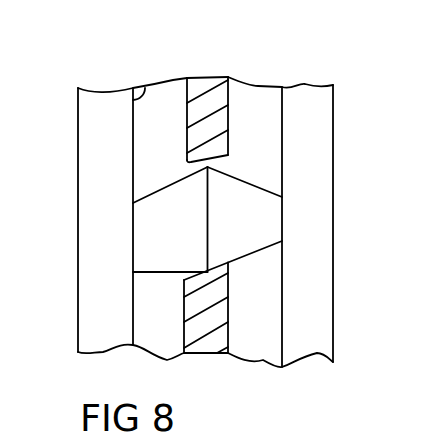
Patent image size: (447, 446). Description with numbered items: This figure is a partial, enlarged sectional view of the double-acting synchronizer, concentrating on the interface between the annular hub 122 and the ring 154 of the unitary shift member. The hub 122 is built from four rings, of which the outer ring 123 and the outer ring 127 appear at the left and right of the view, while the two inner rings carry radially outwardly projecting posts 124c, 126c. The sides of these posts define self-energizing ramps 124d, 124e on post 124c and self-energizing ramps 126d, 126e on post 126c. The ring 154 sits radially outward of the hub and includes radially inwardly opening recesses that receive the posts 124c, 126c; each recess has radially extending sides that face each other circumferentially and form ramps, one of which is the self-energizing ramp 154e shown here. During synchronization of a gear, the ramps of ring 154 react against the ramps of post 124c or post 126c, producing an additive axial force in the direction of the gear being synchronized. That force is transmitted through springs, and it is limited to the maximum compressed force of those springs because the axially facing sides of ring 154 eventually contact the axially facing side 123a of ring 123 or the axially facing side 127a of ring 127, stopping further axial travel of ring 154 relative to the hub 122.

The annular hub 122 is at (72, 72).
The ring 123 is at (70, 163).
The axially facing side 123a is at (145, 88).
The post 124c is at (200, 237).
The self-energizing ramp 124d is at (149, 272).
The self-energizing ramp 124e is at (147, 196).
The post 126c is at (270, 225).
The self-energizing ramp 126d is at (254, 252).
The self-energizing ramp 126e is at (254, 186).
The ring 127 is at (346, 104).
The axially facing side 127a is at (282, 343).
The ring 154 is at (246, 82).
The self-energizing ramp 154e is at (190, 164).